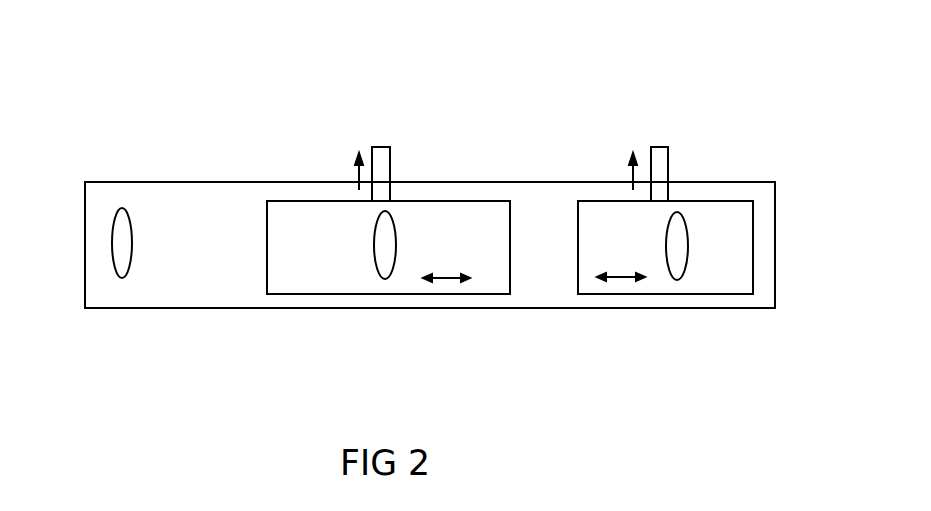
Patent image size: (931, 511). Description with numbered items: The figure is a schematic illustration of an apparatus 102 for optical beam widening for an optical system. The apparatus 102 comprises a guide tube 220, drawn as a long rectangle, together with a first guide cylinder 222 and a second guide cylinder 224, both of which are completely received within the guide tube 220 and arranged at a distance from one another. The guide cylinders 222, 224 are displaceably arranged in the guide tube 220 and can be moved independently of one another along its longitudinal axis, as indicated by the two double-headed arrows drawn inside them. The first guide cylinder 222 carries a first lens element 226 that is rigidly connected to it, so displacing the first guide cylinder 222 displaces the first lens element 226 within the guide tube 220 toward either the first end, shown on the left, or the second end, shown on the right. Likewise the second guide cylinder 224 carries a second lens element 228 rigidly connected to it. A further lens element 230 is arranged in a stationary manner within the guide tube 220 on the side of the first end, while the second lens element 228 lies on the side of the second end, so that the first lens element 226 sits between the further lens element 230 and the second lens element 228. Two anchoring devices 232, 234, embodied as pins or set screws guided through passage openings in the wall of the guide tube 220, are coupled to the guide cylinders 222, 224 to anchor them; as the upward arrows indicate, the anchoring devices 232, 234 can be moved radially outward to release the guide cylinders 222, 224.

The apparatus for optical beam widening 102 is at (172, 128).
The guide tube 220 is at (228, 181).
The first guide cylinder 222 is at (468, 198).
The second guide cylinder 224 is at (727, 198).
The first lens element 226 is at (390, 277).
The second lens element 228 is at (681, 276).
The further lens element 230 is at (127, 276).
The anchoring device 232 is at (390, 168).
The anchoring device 234 is at (668, 162).